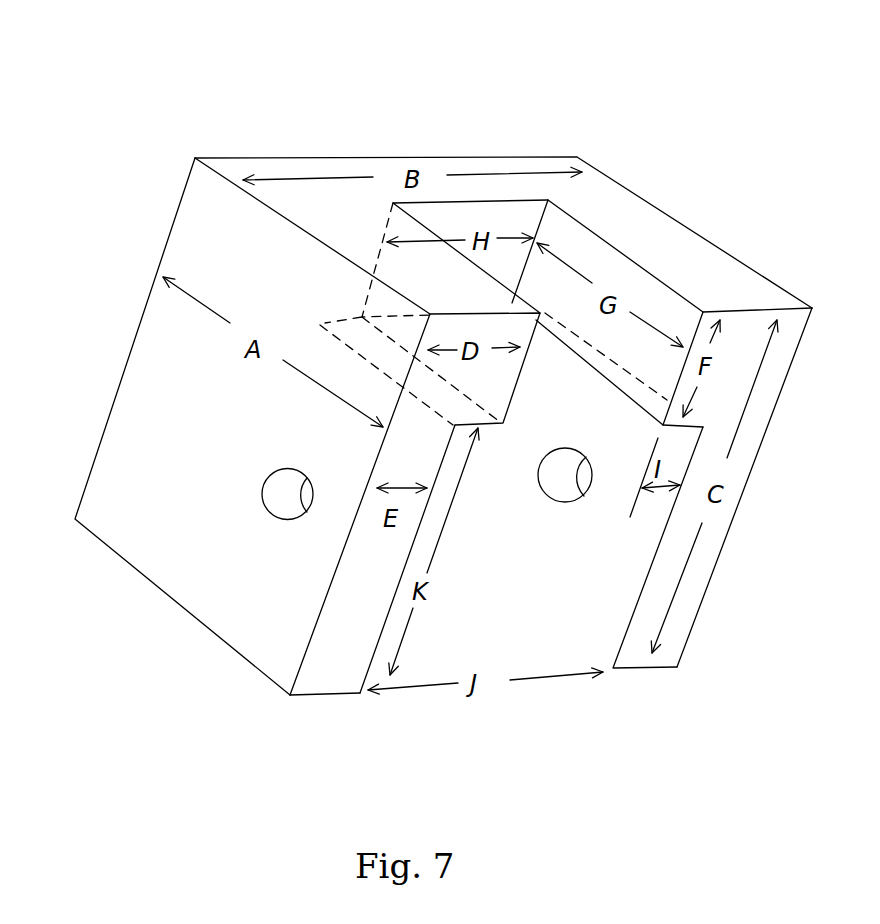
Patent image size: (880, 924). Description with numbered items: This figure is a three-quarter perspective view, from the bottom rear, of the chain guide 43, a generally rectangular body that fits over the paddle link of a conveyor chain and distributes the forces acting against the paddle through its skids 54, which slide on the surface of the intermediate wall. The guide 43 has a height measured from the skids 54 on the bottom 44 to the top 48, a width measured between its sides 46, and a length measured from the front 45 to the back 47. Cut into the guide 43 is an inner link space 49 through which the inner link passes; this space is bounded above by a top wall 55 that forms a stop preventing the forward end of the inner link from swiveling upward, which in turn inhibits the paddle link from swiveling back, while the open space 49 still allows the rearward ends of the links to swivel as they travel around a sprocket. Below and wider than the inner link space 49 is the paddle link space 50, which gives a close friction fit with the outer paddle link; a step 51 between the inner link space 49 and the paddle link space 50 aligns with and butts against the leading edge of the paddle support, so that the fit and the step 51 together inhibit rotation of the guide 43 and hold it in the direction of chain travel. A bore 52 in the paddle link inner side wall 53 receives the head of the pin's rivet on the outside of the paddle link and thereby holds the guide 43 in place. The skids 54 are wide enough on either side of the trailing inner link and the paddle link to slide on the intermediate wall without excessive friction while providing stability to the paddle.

The guide 43 is at (338, 107).
The bottom 44 is at (745, 470).
The front 45 is at (590, 193).
The sides 46 is at (227, 583).
The back 47 is at (275, 700).
The top 48 is at (97, 418).
The inner link space 49 is at (595, 252).
The paddle link space 50 is at (592, 570).
The step 51 is at (637, 388).
The bore 52 is at (278, 493).
The paddle link inner side wall 53 is at (462, 607).
The skids 54 is at (348, 625).
The top wall 55 is at (462, 218).